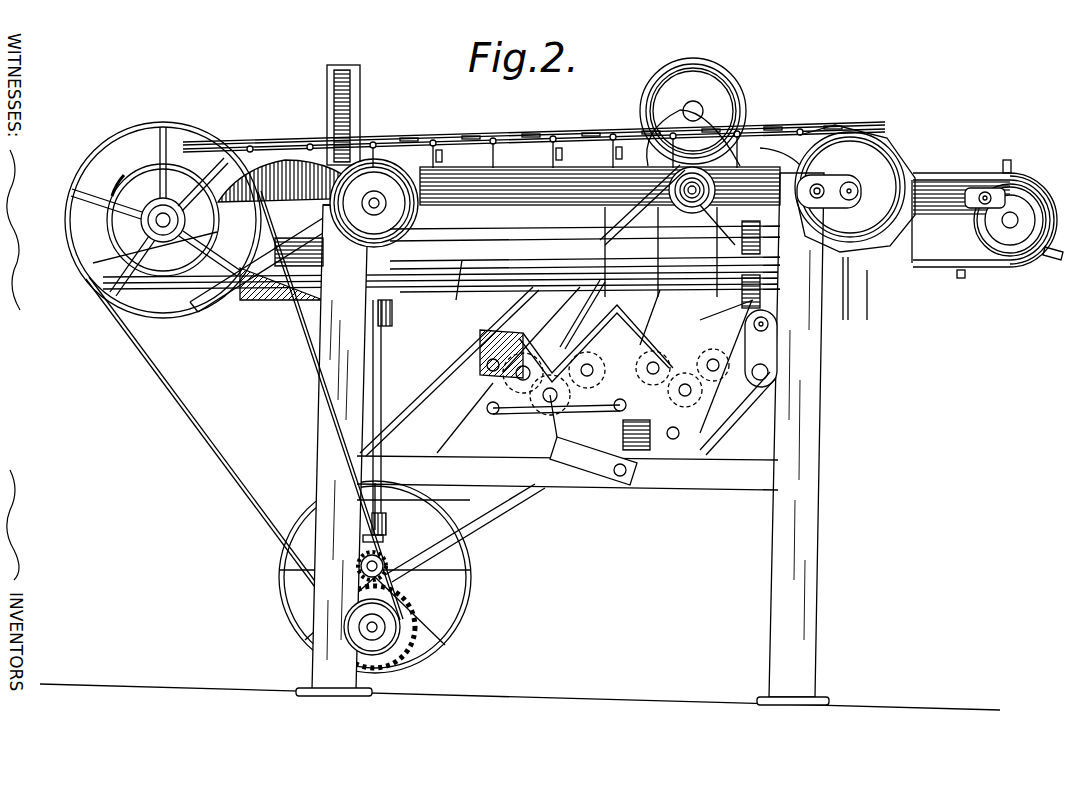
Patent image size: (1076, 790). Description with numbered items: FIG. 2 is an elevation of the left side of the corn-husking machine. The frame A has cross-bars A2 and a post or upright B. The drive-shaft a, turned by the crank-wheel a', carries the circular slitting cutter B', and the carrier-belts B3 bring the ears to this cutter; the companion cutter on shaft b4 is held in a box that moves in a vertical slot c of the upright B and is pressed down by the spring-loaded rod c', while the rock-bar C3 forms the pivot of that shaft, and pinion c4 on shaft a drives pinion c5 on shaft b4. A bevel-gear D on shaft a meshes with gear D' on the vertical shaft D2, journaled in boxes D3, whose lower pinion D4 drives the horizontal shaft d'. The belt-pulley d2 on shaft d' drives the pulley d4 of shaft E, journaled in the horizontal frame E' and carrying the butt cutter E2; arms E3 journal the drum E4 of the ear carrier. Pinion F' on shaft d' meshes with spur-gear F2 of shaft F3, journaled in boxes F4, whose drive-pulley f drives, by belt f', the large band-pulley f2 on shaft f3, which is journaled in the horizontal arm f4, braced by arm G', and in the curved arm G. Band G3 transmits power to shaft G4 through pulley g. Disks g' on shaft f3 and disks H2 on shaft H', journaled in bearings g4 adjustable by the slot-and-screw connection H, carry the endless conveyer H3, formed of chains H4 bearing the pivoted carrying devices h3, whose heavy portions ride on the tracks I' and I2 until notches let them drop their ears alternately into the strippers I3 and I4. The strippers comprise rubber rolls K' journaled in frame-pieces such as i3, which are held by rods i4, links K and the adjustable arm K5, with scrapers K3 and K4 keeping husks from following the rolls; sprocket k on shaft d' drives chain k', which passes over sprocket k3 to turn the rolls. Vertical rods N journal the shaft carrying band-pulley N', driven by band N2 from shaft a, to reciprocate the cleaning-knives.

The frame A is at (318, 433).
The cross-bar A2 is at (567, 388).
The post or upright B is at (373, 111).
The circular cutter B' is at (208, 265).
The carrier-belts B3 is at (323, 225).
The rock-bar C3 is at (360, 90).
The rod c' is at (382, 100).
The pinion c4 is at (760, 297).
The pinion c5 is at (760, 225).
The vertical slot c is at (946, 282).
The bevel-gear D is at (399, 398).
The gear D' is at (408, 326).
The vertical shaft D2 is at (392, 365).
The boxes D3 is at (385, 525).
The beveled pinion D4 is at (430, 512).
The shaft E is at (667, 205).
The horizontal frame E' is at (984, 204).
The saw-toothed or circular cutter E2 is at (693, 112).
The arms E3 is at (1012, 200).
The drum E4 is at (1040, 268).
The pinion F' is at (396, 554).
The spur-gear F2 is at (403, 593).
The horizontal shaft F3 is at (410, 650).
The boxes F4 is at (748, 204).
The arm G is at (370, 203).
The brace arm G' is at (255, 322).
The band G3 is at (272, 168).
The shaft G4 is at (442, 215).
The pulley g is at (393, 223).
The disks g' is at (93, 176).
The bearings g4 is at (858, 191).
The slot-and-screw connection H is at (858, 157).
The revolving shaft H' is at (890, 169).
The disks H2 is at (855, 188).
The endless carrier or conveyer H3 is at (534, 126).
The chains H4 is at (800, 152).
The pivoted carrying devices h3 is at (497, 155).
The track or support I' is at (471, 253).
The track I2 is at (97, 258).
The stripping device I3 is at (550, 368).
The stripping device I4 is at (733, 393).
The frame-piece i3 is at (725, 416).
The bars or rods i4 is at (762, 375).
The links K is at (775, 348).
The rolls K' is at (541, 340).
The scrapers K3 is at (505, 312).
The scraper K4 is at (596, 343).
The adjustable arm K5 is at (593, 440).
The sprocket-wheel k is at (615, 373).
The chain k' is at (531, 406).
The sprocket k3 is at (760, 360).
The vertical rods N is at (580, 314).
The band-pulley N' is at (661, 446).
The band N2 is at (667, 316).
The drive-shaft a is at (710, 366).
The crank-wheel a' is at (867, 288).
The shaft b4 is at (585, 218).
The horizontal shaft d' is at (354, 566).
The belt-pulley d2 is at (462, 550).
The pulley d4 is at (706, 215).
The drive-pulley f is at (407, 627).
The belt or band f' is at (220, 457).
The band-pulley f2 is at (197, 141).
The shaft f3 is at (163, 220).
The arm f4 is at (325, 222).